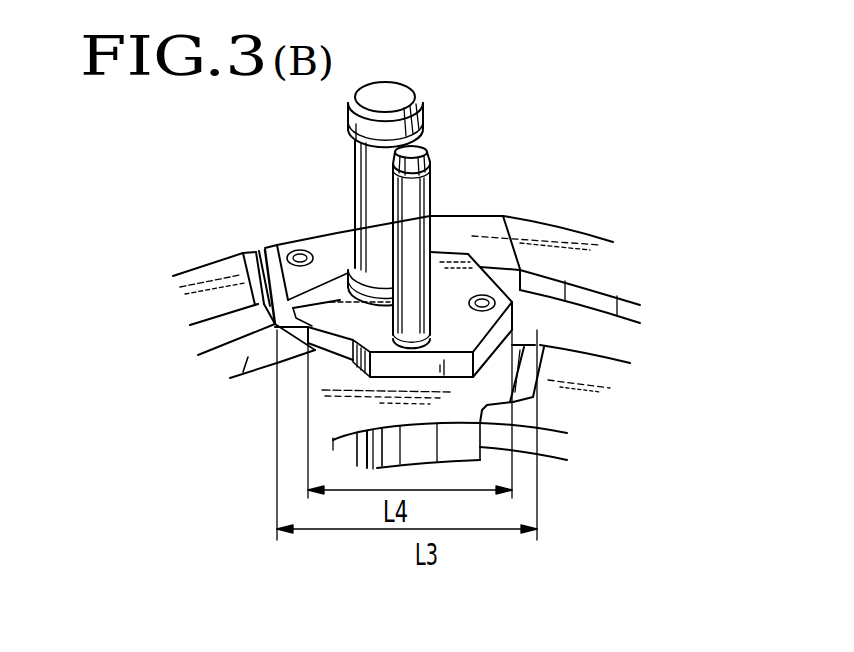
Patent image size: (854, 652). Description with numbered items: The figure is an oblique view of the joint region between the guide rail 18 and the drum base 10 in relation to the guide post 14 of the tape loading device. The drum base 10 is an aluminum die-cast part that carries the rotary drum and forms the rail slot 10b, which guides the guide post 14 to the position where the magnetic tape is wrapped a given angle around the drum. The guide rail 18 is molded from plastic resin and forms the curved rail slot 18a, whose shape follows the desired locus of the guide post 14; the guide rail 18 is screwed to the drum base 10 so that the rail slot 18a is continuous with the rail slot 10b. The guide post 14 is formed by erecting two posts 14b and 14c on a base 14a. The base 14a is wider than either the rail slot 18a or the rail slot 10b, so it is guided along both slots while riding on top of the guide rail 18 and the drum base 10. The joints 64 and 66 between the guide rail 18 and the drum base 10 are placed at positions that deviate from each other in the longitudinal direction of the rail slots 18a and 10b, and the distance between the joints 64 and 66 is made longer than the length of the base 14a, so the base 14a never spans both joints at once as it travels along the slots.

The drum base 10 is at (238, 330).
The rail slot 10b is at (247, 358).
The guide post 14 is at (378, 212).
The base 14a is at (458, 272).
The post 14b is at (393, 98).
The post 14c is at (430, 205).
The guide rail 18 is at (580, 253).
The rail slot 18a is at (622, 337).
The joint 64 is at (544, 332).
The joint 66 is at (262, 238).